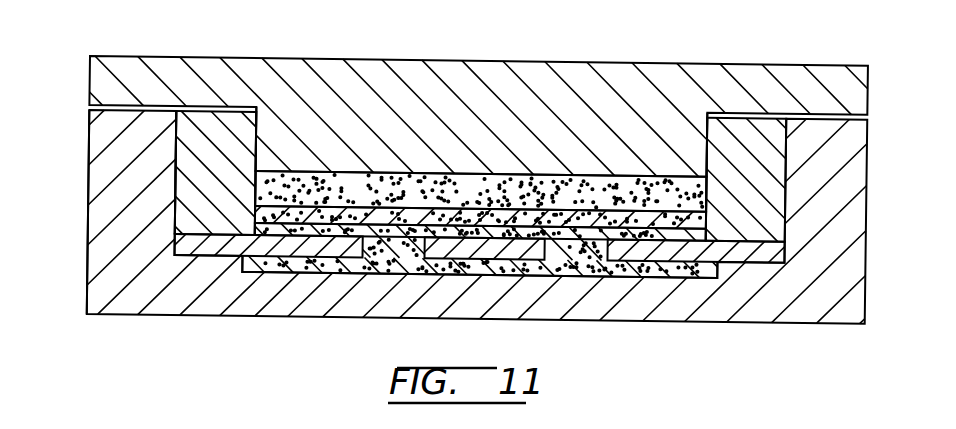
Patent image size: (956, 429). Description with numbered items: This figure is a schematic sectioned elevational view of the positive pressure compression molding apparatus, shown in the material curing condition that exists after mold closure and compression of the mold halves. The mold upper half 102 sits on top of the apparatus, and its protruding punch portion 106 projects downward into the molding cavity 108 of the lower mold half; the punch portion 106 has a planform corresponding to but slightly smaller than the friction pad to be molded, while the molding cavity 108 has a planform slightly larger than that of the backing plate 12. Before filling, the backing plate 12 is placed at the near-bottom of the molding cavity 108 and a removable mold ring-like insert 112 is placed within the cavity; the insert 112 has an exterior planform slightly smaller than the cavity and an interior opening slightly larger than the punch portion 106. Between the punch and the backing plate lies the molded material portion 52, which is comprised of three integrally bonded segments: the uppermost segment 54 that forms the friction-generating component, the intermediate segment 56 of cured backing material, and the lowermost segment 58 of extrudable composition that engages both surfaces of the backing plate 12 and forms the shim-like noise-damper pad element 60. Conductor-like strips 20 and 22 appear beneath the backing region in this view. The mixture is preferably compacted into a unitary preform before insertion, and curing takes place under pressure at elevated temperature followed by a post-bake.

The backing plate 12 is at (192, 255).
The first conductor 20 is at (397, 244).
The second conductor 22 is at (548, 248).
The molded material portion 52 is at (452, 168).
The uppermost segment 54 is at (515, 212).
The intermediate segment 56 is at (560, 228).
The lowermost segment 58 is at (616, 238).
The noise-damper pad element 60 is at (288, 266).
The mold upper half 102 is at (380, 58).
The punch portion 106 is at (254, 136).
The molding cavity 108 is at (178, 128).
The mold ring-like insert 112 is at (178, 155).